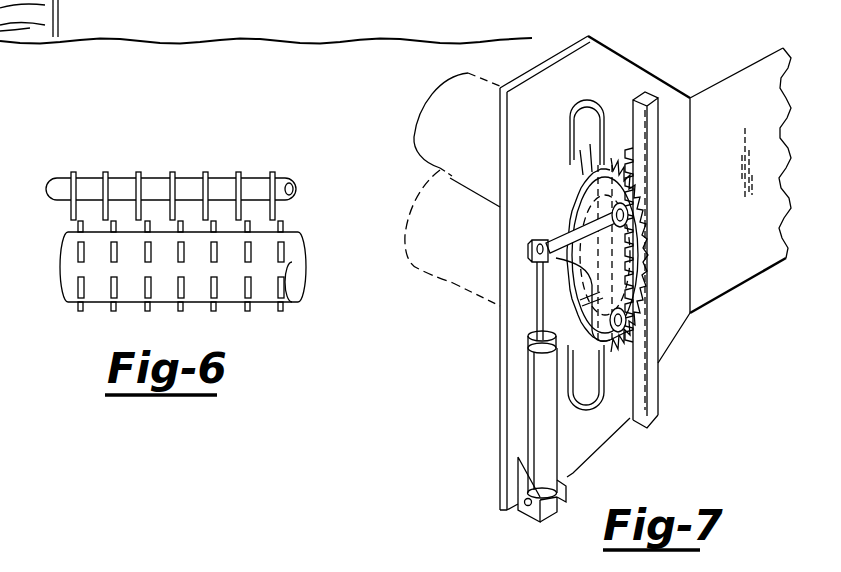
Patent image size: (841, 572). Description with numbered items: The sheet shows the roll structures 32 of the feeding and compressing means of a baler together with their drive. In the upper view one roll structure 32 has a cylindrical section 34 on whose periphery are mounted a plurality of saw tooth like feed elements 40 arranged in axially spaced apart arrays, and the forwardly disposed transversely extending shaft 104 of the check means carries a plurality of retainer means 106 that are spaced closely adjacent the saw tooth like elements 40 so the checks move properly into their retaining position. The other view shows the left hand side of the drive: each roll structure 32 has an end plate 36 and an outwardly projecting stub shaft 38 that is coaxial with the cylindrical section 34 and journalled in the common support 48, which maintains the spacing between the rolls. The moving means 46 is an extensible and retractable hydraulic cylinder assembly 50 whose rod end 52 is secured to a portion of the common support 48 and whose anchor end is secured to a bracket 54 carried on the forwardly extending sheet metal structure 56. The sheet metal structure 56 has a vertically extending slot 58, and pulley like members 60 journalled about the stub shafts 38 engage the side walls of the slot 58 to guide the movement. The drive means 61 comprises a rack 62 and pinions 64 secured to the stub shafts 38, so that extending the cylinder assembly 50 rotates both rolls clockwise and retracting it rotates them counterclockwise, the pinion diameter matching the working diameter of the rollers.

In FIG. 6, the transversely extending shaft 104 is at (84, 186).
In FIG. 6, the retainer means 106 is at (265, 210).
In FIG. 6, the cylindrical section 34 is at (100, 292).
In FIG. 6, the saw tooth like feed elements 40 is at (283, 292).
In FIG. 7, the roll structure 32 is at (410, 147).
In FIG. 7, the end plate 36 is at (535, 318).
In FIG. 7, the stub shaft 38 is at (553, 342).
In FIG. 7, the moving means 46 is at (592, 440).
In FIG. 7, the common support 48 is at (552, 243).
In FIG. 7, the hydraulic cylinder assembly 50 is at (533, 410).
In FIG. 7, the rod end 52 is at (534, 262).
In FIG. 7, the bracket 54 is at (528, 506).
In FIG. 7, the sheet metal structure 56 is at (513, 445).
In FIG. 7, the vertically extending slot 58 is at (596, 112).
In FIG. 7, the pulley like member 60 is at (553, 332).
In FIG. 7, the drive means 61 is at (662, 178).
In FIG. 7, the rack 62 is at (652, 128).
In FIG. 7, the pinion 64 is at (608, 150).